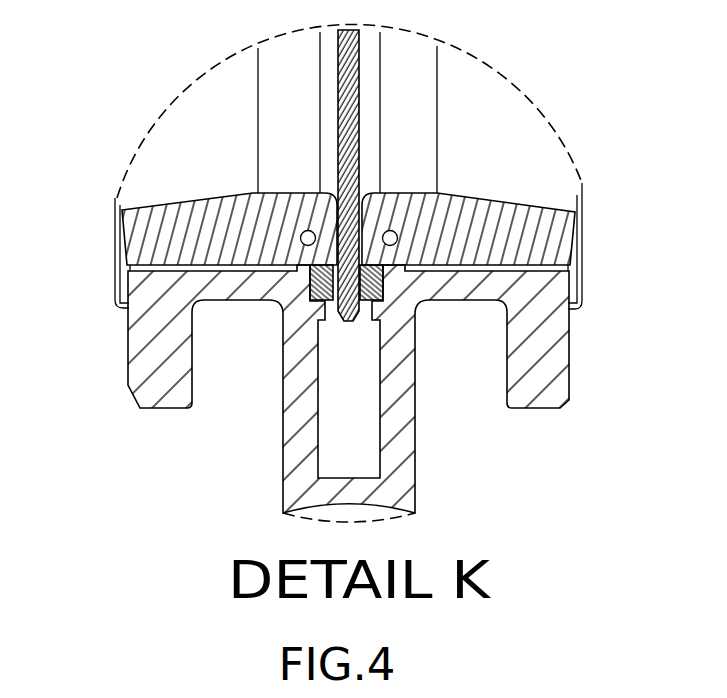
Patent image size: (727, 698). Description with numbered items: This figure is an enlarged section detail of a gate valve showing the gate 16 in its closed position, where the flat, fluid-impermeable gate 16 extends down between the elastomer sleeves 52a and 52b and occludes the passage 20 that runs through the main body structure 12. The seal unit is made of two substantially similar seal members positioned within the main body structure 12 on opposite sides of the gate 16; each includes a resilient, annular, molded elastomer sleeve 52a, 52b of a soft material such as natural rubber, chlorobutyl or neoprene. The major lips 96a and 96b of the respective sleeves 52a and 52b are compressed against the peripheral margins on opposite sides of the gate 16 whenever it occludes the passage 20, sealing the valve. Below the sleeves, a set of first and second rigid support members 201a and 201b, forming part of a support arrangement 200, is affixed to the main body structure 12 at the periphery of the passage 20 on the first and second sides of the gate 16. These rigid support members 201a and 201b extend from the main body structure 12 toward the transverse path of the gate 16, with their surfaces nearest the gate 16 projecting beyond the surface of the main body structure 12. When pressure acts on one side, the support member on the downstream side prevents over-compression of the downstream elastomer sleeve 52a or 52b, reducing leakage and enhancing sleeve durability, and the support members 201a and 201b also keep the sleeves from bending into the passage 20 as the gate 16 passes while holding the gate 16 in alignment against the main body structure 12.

The main body structure 12 is at (543, 385).
The gate 16 is at (345, 108).
The passage 20 is at (246, 113).
The elastomer sleeve 52a is at (173, 240).
The elastomer sleeve 52b is at (523, 230).
The major lip 96a is at (335, 223).
The major lip 96b is at (363, 223).
The seal assembly 200 is at (361, 400).
The first rigid support member 201a is at (316, 285).
The second rigid support member 201b is at (381, 283).